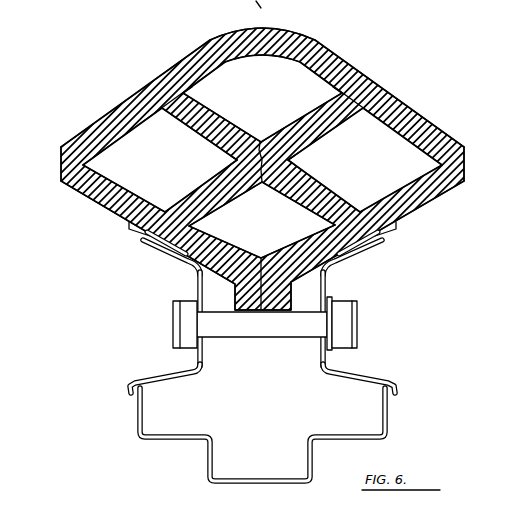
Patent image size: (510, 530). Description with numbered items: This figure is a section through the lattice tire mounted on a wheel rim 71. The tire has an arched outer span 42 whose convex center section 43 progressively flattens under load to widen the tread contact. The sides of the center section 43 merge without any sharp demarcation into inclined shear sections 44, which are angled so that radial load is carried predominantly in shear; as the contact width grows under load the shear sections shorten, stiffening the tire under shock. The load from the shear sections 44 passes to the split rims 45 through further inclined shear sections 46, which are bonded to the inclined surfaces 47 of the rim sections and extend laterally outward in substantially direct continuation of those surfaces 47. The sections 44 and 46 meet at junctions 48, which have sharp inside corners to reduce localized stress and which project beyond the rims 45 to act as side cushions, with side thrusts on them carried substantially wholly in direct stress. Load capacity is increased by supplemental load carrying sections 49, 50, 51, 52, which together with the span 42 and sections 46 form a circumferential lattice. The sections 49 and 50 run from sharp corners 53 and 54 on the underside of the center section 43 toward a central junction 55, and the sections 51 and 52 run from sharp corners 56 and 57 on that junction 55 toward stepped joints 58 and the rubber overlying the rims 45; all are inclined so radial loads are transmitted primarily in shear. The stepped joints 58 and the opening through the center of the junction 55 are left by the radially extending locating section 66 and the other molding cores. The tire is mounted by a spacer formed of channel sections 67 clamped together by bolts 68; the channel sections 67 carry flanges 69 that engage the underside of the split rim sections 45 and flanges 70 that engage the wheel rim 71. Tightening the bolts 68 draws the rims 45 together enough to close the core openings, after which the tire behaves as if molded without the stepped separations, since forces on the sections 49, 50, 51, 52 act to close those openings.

The arched outer span 42 is at (117, 104).
The convex center section 43 is at (295, 30).
The inclined shear sections 44 is at (108, 122).
The split rims 45 is at (132, 231).
The inclined shear sections 46 is at (104, 201).
The inclined surfaces 47 is at (203, 236).
The junctions 48 is at (62, 164).
The supplemental load carrying section 49 is at (220, 125).
The supplemental load carrying section 50 is at (312, 116).
The supplemental load carrying section 51 is at (200, 190).
The supplemental load carrying section 52 is at (318, 191).
The sharp corner 53 is at (184, 94).
The sharp corner 54 is at (341, 94).
The junction 55 is at (258, 146).
The sharp corner 56 is at (235, 160).
The sharp corner 57 is at (289, 161).
The stepped joints 58 is at (160, 245).
The radial core section 66 is at (269, 7).
The channel sections 67 is at (196, 283).
The bolts 68 is at (358, 320).
The flanges 69 is at (177, 258).
The flanges 70 is at (152, 372).
The wheel rim 71 is at (165, 442).